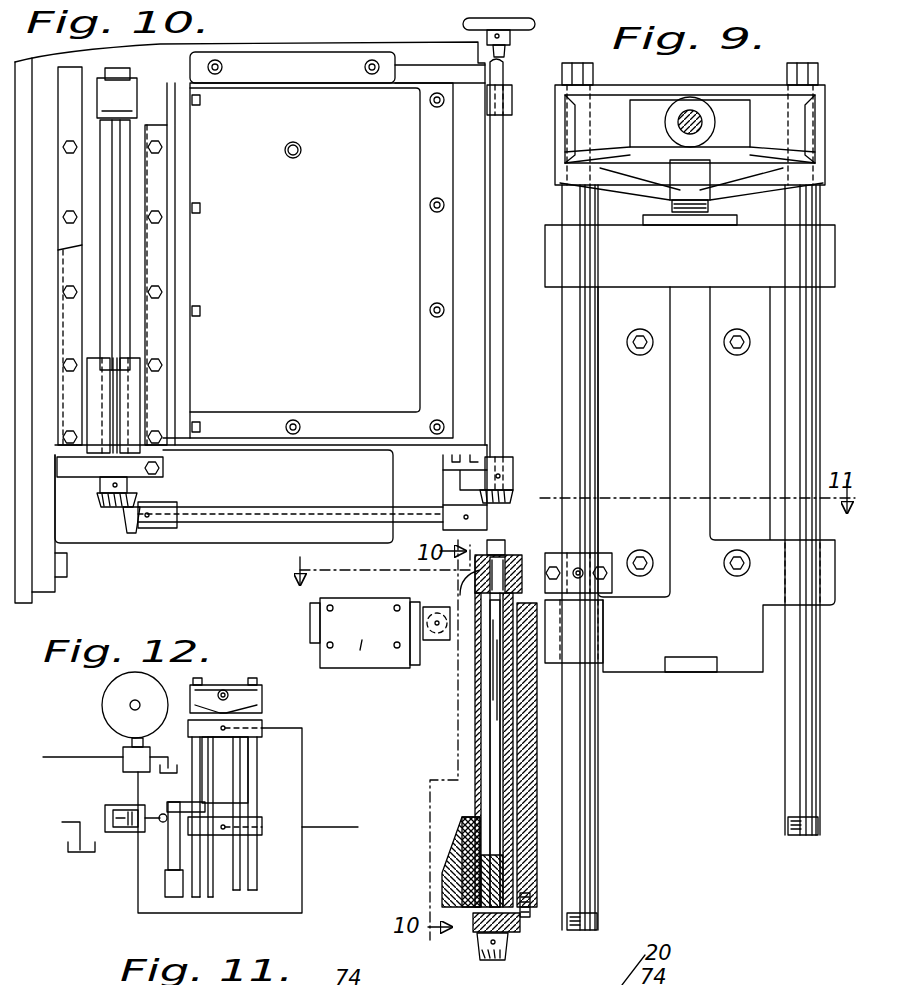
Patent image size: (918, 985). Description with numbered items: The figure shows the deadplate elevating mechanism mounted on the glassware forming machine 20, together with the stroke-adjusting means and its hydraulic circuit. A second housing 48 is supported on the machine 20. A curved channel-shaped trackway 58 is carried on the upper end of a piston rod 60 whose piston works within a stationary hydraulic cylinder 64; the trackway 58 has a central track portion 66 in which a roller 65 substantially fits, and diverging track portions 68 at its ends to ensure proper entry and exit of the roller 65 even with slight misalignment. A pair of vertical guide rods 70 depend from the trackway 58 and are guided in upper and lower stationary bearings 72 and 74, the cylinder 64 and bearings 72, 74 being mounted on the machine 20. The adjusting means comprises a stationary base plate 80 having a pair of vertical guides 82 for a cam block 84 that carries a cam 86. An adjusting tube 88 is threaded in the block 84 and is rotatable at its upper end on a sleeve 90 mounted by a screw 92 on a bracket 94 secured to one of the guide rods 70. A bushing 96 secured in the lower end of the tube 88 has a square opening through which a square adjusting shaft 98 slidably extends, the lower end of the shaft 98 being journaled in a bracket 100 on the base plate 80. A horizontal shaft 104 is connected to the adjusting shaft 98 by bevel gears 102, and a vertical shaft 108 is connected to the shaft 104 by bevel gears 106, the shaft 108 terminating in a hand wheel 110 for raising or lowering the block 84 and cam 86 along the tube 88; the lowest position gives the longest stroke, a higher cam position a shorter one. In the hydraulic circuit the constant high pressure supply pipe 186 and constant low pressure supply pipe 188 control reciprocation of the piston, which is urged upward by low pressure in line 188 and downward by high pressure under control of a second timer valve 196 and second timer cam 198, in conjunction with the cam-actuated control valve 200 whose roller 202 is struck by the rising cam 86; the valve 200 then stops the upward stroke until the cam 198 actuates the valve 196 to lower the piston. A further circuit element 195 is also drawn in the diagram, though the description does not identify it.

In FIG. 10, the glassware forming machine 20 is at (22, 628).
In FIG. 10, the second housing 48 is at (343, 383).
In FIG. 9, the trackway 58 is at (718, 93).
In FIG. 12, the trackway 58 is at (238, 690).
In FIG. 9, the piston rod 60 is at (710, 212).
In FIG. 9, the hydraulic cylinder 64 is at (690, 643).
In FIG. 12, the hydraulic cylinder 64 is at (225, 777).
In FIG. 9, the roller 65 is at (704, 117).
In FIG. 12, the roller 65 is at (219, 690).
In FIG. 9, the central track portion 66 is at (648, 107).
In FIG. 9, the diverging track portions 68 is at (808, 125).
In FIG. 9, the vertical guide rods 70 is at (797, 415).
In FIG. 12, the vertical guide rods 70 is at (253, 845).
In FIG. 9, the upper bearing 72 is at (836, 240).
In FIG. 12, the upper bearing 72 is at (262, 722).
In FIG. 9, the lower bearing 74 is at (580, 650).
In FIG. 12, the lower bearing 74 is at (257, 806).
In FIG. 10, the base plate 80 is at (530, 765).
In FIG. 10, the vertical guides 82 is at (155, 200).
In FIG. 10, the cam block 84 is at (135, 360).
In FIG. 10, the cam 86 is at (113, 405).
In FIG. 12, the cam 86 is at (165, 880).
In FIG. 10, the adjusting tube 88 is at (130, 262).
In FIG. 10, the sleeve 90 is at (480, 602).
In FIG. 10, the screw 92 is at (113, 72).
In FIG. 10, the bracket 94 is at (548, 553).
In FIG. 10, the bushing 96 is at (500, 873).
In FIG. 10, the adjusting shaft 98 is at (493, 787).
In FIG. 10, the bracket 100 is at (515, 928).
In FIG. 10, the bevel gears 102 is at (123, 514).
In FIG. 10, the horizontal shaft 104 is at (318, 512).
In FIG. 10, the bevel gears 106 is at (508, 492).
In FIG. 10, the vertical shaft 108 is at (503, 230).
In FIG. 10, the hand wheel 110 is at (522, 38).
In FIG. 12, the constant high pressure supply pipe 186 is at (88, 762).
In FIG. 12, the constant low pressure supply pipe 188 is at (302, 840).
In FIG. 12, the relief valve 195 is at (110, 791).
In FIG. 12, the second timer valve 196 is at (142, 772).
In FIG. 12, the second timer cam 198 is at (102, 700).
In FIG. 10, the cam-actuated control valve 200 is at (362, 640).
In FIG. 12, the cam-actuated control valve 200 is at (120, 834).
In FIG. 10, the roller 202 is at (452, 630).